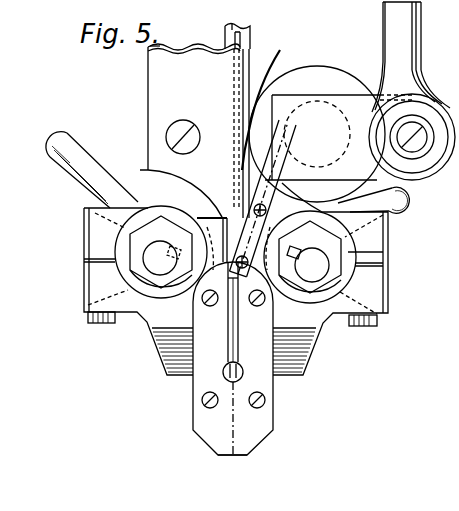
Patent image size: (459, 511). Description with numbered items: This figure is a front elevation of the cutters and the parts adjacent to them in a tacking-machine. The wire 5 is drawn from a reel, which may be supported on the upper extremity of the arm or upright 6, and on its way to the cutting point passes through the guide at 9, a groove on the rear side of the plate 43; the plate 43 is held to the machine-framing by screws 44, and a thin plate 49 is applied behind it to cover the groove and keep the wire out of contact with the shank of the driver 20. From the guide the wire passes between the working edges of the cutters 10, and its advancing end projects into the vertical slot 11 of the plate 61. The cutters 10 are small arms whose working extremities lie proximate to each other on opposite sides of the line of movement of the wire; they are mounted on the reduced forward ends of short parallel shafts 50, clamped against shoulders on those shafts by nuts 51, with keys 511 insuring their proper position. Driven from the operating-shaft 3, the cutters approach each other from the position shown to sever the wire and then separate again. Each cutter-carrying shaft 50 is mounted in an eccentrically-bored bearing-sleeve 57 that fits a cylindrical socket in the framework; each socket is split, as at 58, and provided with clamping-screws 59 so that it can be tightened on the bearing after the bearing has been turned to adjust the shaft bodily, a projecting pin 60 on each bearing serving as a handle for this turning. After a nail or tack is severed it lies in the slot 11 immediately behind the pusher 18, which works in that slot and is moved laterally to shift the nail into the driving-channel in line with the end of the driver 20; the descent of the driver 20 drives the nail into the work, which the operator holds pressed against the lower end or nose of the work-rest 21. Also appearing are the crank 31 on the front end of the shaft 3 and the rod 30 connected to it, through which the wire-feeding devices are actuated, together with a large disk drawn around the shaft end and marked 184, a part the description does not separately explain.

The operating-shaft 3 is at (340, 101).
The wire 5 is at (250, 36).
The arm or upright 6 is at (262, 261).
The guide 9 is at (228, 72).
The cutters 10 is at (235, 248).
The vertical slot 11 is at (224, 330).
The pusher 18 is at (238, 344).
The driver 20 is at (232, 24).
The work-rest 21 is at (218, 461).
The rod 30 is at (418, 33).
The crank 31 is at (339, 137).
The plate 43 is at (194, 153).
The screws 44 is at (198, 143).
The thin plate 49 is at (222, 46).
The short parallel shafts 50 is at (350, 285).
The nuts 51 is at (235, 254).
The eccentrically-bored bearing-sleeve 57 is at (105, 232).
The split 58 is at (90, 262).
The clamping-screws 59 is at (97, 323).
The projecting pin 60 is at (70, 175).
The plate 61 is at (188, 406).
The cam disc 184 is at (321, 65).
The keys 511 is at (172, 248).